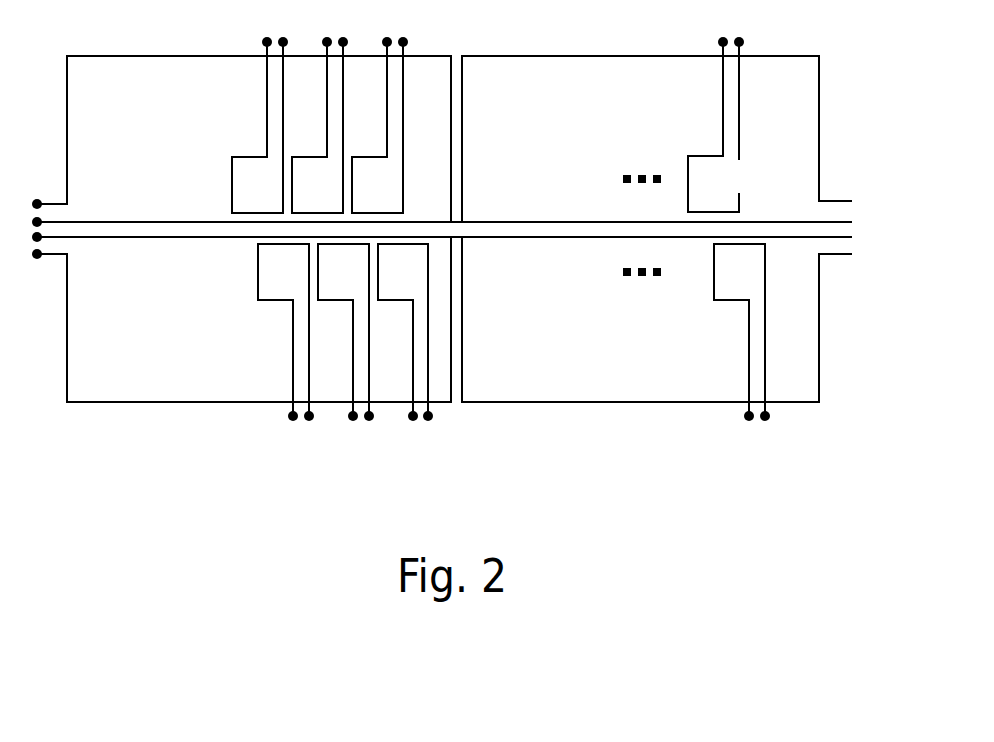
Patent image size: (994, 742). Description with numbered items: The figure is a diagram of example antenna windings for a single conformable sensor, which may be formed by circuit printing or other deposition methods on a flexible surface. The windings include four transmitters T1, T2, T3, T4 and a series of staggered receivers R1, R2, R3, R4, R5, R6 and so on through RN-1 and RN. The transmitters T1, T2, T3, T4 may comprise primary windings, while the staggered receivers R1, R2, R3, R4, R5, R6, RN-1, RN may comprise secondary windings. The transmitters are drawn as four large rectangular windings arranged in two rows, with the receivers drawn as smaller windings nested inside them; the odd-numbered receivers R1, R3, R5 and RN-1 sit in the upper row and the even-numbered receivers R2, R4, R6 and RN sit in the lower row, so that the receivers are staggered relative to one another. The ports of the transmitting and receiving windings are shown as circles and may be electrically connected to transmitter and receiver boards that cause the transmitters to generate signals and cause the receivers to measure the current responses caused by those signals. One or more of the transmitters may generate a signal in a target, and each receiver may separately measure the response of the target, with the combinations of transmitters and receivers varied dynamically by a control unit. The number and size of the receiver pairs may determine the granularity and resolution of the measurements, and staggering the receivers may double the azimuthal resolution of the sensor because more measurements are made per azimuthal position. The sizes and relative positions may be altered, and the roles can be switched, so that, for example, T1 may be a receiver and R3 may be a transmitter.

The transmitter T1 is at (244, 139).
The transmitter T2 is at (244, 319).
The transmitter T3 is at (657, 139).
The transmitter T4 is at (657, 319).
The staggered receiver R1 is at (260, 125).
The staggered receiver R2 is at (286, 332).
The staggered receiver R3 is at (320, 125).
The staggered receiver R4 is at (346, 332).
The staggered receiver R5 is at (380, 125).
The staggered receiver R6 is at (405, 332).
The staggered receiver RN-1 is at (716, 124).
The staggered receiver RN is at (742, 332).